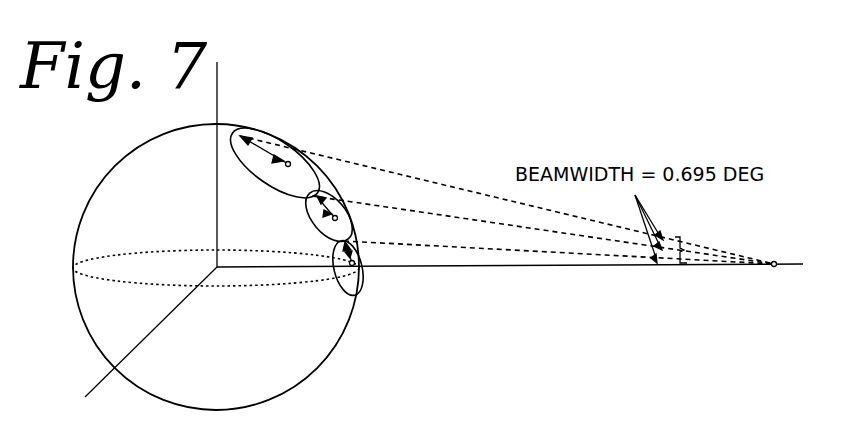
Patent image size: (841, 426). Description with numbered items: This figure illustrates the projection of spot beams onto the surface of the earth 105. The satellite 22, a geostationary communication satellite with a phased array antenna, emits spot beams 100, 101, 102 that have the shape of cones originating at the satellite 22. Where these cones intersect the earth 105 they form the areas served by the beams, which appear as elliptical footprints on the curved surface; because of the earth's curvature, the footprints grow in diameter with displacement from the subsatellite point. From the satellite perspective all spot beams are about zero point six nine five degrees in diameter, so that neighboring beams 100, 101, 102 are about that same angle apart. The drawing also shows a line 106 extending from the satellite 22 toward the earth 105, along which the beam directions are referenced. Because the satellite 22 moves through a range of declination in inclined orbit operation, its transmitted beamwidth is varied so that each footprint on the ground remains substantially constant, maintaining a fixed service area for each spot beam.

The satellite 22 is at (776, 262).
The spot beam 100 is at (352, 288).
The spot beam 101 is at (340, 225).
The spot beam 102 is at (234, 140).
The earth 105 is at (333, 358).
The boresight line 106 is at (597, 268).